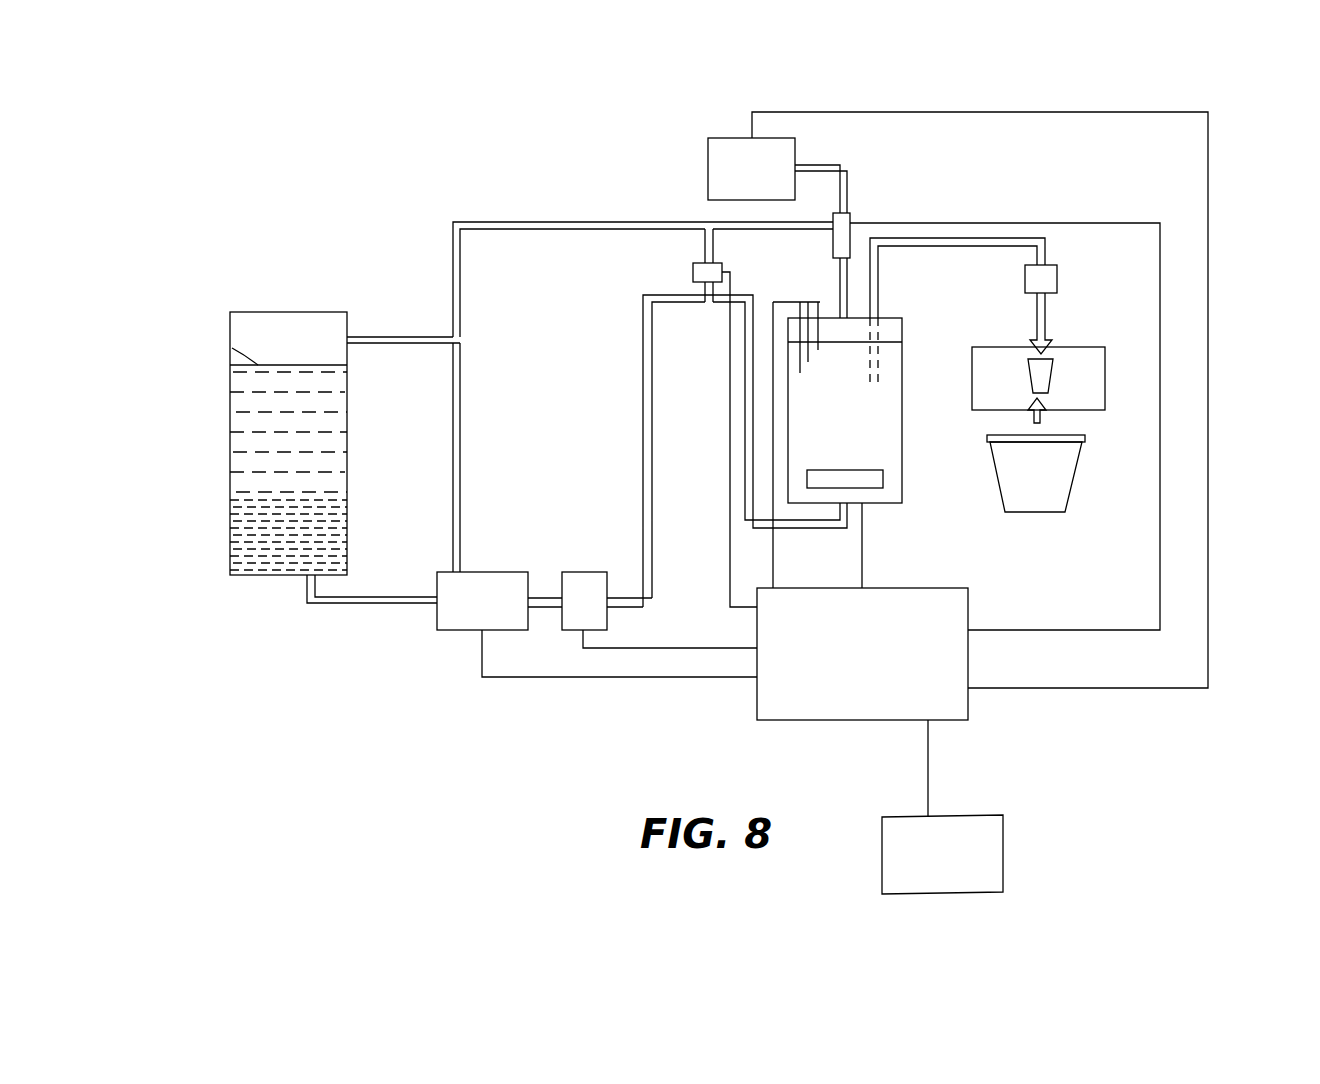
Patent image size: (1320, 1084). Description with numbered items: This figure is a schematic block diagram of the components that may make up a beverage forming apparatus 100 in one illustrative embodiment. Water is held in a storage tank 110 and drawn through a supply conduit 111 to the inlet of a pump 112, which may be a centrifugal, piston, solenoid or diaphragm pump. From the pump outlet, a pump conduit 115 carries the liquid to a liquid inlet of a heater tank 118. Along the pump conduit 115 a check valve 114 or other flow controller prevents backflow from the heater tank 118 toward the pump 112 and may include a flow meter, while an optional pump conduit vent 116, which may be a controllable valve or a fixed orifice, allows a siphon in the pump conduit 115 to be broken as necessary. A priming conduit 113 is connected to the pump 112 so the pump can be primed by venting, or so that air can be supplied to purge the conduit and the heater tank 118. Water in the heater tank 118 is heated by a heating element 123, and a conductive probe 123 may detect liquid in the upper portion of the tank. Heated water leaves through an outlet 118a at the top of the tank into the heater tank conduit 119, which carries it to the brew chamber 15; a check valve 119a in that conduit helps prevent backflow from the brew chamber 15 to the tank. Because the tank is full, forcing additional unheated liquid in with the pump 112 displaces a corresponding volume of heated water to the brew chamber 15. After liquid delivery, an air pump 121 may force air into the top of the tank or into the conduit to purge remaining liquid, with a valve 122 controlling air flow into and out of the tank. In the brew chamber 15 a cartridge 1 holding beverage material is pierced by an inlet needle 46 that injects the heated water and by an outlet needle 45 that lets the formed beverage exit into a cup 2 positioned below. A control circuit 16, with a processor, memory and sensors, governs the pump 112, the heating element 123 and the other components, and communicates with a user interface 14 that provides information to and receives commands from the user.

The beverage forming apparatus 100 is at (258, 124).
The storage tank 110 is at (230, 500).
The supply conduit 111 is at (332, 605).
The pump 112 is at (440, 632).
The priming conduit 113 is at (460, 420).
The check valve 114 is at (583, 572).
The pump conduit 115 is at (643, 345).
The pump conduit vent 116 is at (693, 272).
The heater tank 118 is at (903, 322).
The outlet of heating chamber 118a is at (877, 320).
The heater tank conduit 119 is at (975, 238).
The check valve 119a is at (1057, 280).
The air pump 121 is at (710, 140).
The valve 122 is at (851, 215).
The heating element 123 is at (802, 352).
The cartridge 1 is at (1028, 385).
The cup 2 is at (1045, 512).
The user interface 14 is at (982, 853).
The brew chamber 15 is at (1063, 346).
The control circuit 16 is at (948, 722).
The outlet needle 45 is at (1042, 418).
The inlet needle 46 is at (1040, 353).